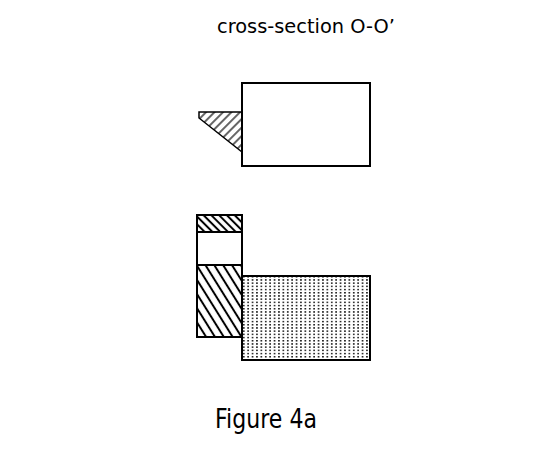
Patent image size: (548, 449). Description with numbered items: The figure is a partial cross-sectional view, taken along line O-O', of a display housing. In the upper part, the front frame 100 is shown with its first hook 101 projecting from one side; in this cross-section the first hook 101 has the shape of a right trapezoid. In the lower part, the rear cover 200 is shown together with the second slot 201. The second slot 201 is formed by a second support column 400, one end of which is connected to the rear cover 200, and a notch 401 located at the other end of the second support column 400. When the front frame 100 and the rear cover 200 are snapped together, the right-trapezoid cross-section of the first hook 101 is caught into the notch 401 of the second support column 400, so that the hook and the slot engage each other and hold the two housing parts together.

The front frame 100 is at (340, 127).
The first hook 101 is at (232, 134).
The rear cover 200 is at (340, 321).
The second slot 201 is at (122, 242).
The second support column 400 is at (232, 306).
The notch 401 is at (226, 250).